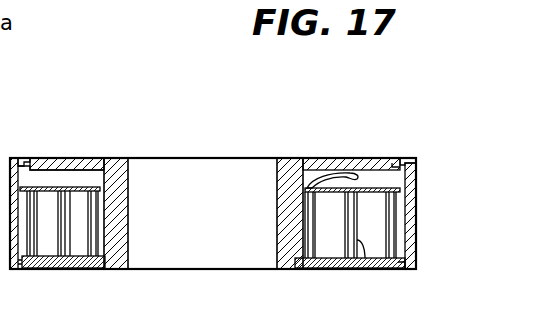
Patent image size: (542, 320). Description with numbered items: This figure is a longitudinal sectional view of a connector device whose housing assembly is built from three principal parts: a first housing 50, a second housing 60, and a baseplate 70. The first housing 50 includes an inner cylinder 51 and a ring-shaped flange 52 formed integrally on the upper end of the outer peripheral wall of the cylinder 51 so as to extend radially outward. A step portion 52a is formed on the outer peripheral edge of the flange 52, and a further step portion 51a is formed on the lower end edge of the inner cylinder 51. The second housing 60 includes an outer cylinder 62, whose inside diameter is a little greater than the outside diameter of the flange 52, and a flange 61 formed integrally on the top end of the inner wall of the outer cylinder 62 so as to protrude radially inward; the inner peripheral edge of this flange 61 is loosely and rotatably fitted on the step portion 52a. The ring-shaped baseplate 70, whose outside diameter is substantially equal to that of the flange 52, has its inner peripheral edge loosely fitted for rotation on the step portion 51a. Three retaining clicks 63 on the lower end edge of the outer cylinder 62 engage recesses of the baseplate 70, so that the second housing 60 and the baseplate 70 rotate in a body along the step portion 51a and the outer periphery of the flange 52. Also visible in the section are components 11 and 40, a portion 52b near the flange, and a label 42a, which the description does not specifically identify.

The second housing 60 is at (418, 193).
The outer cylinder 62 is at (416, 233).
The first housing 50 is at (288, 158).
The ring-shaped flange 52 is at (308, 160).
The step portion 52a is at (398, 160).
The spring tab 52b is at (320, 168).
The flange 61 is at (404, 159).
The mounting plate 40 is at (386, 170).
The cell tube 11 is at (365, 269).
The baseplate 70 is at (325, 269).
The retaining clicks 63 is at (405, 269).
The inner cylinder 51 is at (280, 226).
The step portion 51a is at (100, 268).
The stray label 42a is at (135, 23).